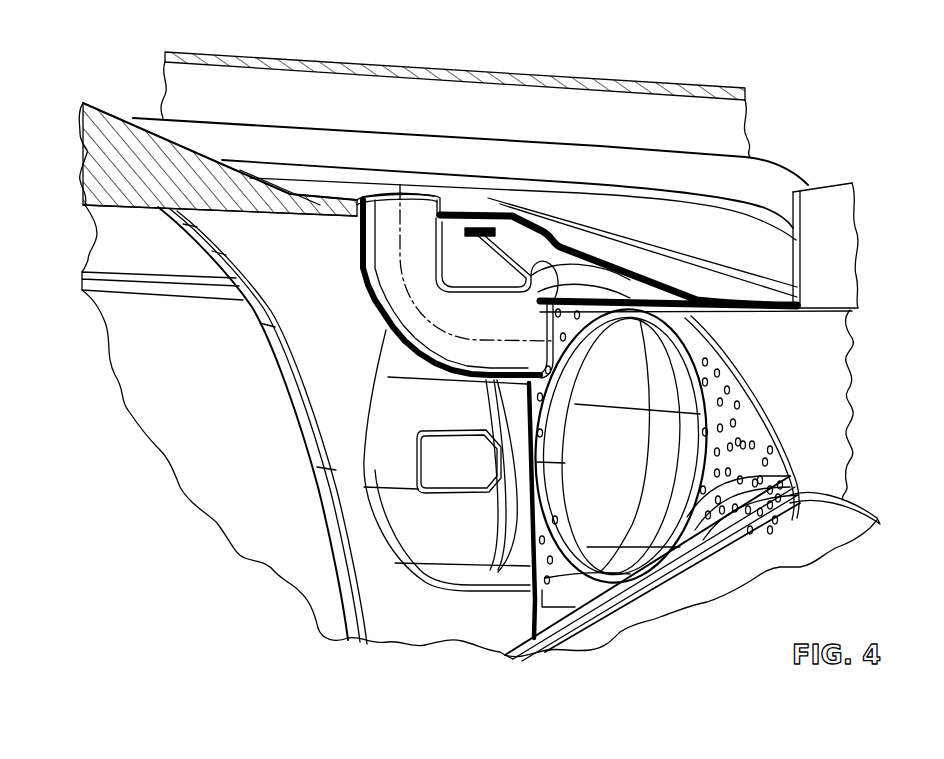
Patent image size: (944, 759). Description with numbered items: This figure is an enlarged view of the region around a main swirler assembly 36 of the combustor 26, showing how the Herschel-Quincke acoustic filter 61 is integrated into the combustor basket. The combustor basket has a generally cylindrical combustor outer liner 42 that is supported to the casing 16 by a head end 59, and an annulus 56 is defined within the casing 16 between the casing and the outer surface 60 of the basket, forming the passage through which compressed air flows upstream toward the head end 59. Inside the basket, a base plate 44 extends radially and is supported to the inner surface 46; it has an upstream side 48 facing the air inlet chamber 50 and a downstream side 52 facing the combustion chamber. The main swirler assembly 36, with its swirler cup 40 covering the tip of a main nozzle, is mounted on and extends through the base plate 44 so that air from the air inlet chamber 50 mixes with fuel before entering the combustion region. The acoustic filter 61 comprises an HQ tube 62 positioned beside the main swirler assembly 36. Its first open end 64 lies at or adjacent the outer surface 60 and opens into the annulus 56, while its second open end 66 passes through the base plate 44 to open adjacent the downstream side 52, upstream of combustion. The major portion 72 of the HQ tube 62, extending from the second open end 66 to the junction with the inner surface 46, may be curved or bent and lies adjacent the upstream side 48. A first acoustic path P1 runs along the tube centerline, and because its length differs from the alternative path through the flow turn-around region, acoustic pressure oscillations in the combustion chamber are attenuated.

The casing 16 is at (356, 58).
The annulus 56 is at (675, 108).
The combustor 26 is at (207, 148).
The head end 59 is at (84, 133).
The inner surface 46 is at (280, 236).
The outer surface 60 is at (350, 207).
The major portion 72 is at (383, 312).
The Herschel-Quincke acoustic filter 61 is at (447, 190).
The first open end 64 is at (420, 188).
The HQ tube 62 is at (430, 282).
The first acoustic path P1 is at (362, 274).
The second open end 66 is at (563, 327).
The swirler cup 40 is at (687, 388).
The base plate 44 is at (742, 433).
The combustor outer liner 42 is at (785, 292).
The upstream side 48 is at (530, 590).
The main swirler assembly 36 is at (518, 597).
The downstream side 52 is at (606, 640).
The air inlet chamber 50 is at (268, 537).